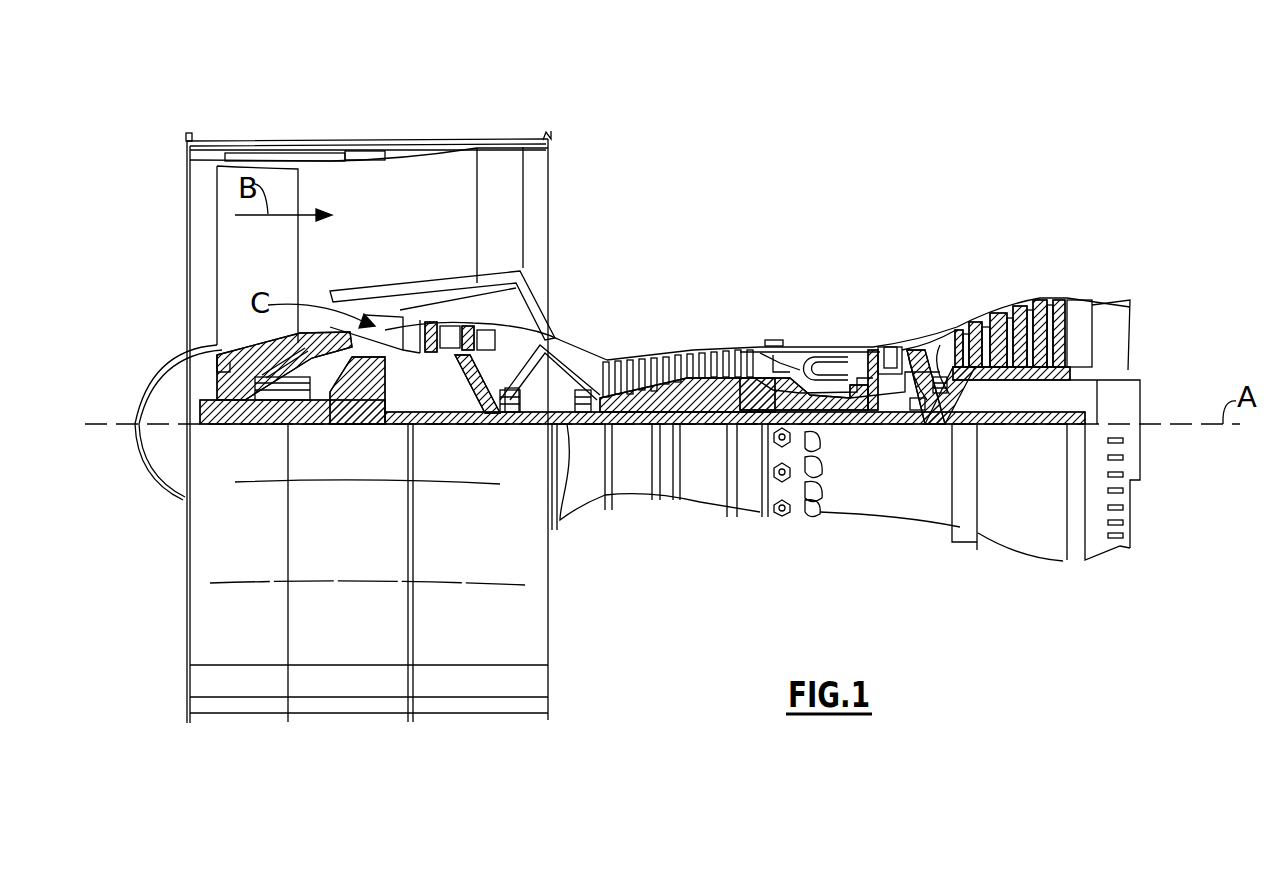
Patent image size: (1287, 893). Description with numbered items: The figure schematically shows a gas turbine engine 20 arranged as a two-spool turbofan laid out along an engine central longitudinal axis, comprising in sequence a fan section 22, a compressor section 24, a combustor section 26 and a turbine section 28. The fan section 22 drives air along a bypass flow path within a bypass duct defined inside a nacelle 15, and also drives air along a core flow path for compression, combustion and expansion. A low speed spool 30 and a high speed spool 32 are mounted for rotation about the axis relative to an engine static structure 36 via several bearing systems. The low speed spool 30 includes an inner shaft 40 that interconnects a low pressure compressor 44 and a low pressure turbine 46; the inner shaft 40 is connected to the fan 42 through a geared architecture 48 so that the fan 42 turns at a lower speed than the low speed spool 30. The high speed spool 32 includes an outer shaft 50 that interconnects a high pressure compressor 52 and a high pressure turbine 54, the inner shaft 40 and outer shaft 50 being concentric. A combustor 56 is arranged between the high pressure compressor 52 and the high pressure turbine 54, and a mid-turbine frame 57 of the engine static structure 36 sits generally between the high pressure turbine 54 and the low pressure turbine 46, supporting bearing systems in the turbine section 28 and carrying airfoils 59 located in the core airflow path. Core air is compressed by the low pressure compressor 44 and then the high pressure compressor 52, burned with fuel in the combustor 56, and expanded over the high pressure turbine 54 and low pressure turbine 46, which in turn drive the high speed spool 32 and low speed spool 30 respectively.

The nacelle 15 is at (368, 146).
The gas turbine engine 20 is at (829, 187).
The fan section 22 is at (298, 126).
The compressor section 24 is at (604, 325).
The combustor section 26 is at (822, 320).
The turbine section 28 is at (976, 278).
The low speed spool 30 is at (707, 438).
The high speed spool 32 is at (753, 382).
The engine static structure 36 is at (748, 520).
The inner shaft 40 is at (568, 428).
The fan 42 is at (272, 273).
The low pressure compressor 44 is at (474, 330).
The low pressure turbine 46 is at (1015, 313).
The geared architecture 48 is at (376, 404).
The outer shaft 50 is at (833, 414).
The high pressure compressor 52 is at (667, 366).
The high pressure turbine 54 is at (890, 346).
The combustor 56 is at (826, 366).
The mid-turbine frame 57 is at (938, 324).
The airfoils 59 is at (960, 394).